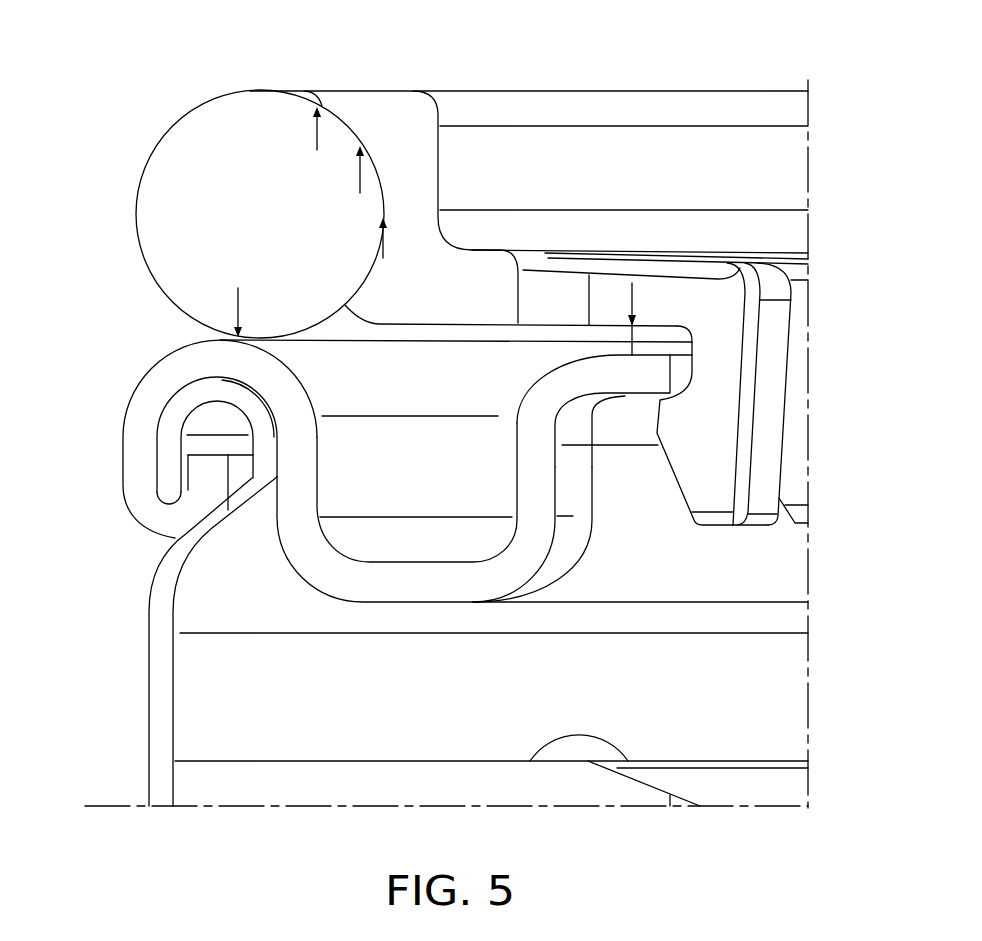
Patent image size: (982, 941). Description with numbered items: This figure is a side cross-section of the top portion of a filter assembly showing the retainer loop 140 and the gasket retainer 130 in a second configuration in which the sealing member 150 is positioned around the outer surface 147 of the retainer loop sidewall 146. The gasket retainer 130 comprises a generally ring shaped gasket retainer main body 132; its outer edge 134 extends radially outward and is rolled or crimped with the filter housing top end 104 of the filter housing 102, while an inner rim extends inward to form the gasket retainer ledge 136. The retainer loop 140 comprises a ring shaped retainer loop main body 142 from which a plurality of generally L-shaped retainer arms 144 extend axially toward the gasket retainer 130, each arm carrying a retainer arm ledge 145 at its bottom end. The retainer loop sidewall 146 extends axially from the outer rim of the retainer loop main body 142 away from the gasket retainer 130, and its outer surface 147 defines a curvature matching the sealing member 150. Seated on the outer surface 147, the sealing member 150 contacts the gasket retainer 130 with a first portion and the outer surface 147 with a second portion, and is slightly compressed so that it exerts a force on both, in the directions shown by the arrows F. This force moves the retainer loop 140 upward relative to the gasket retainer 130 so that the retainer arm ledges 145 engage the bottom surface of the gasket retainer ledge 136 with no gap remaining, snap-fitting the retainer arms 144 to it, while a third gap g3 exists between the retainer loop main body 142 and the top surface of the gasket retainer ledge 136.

The filter housing 102 is at (160, 682).
The filter housing top end 104 is at (165, 433).
The gasket retainer 130 is at (147, 347).
The gasket retainer main body 132 is at (357, 580).
The outer edge 134 is at (202, 482).
The gasket retainer ledge 136 is at (657, 377).
The retainer loop 140 is at (661, 160).
The retainer loop main body 142 is at (603, 262).
The retainer arms 144 is at (727, 356).
The retainer arm ledge 145 is at (712, 447).
The retainer loop sidewall 146 is at (400, 152).
The outer surface 147 is at (338, 157).
The sealing member 150 is at (160, 152).
The third gap g3 is at (633, 297).